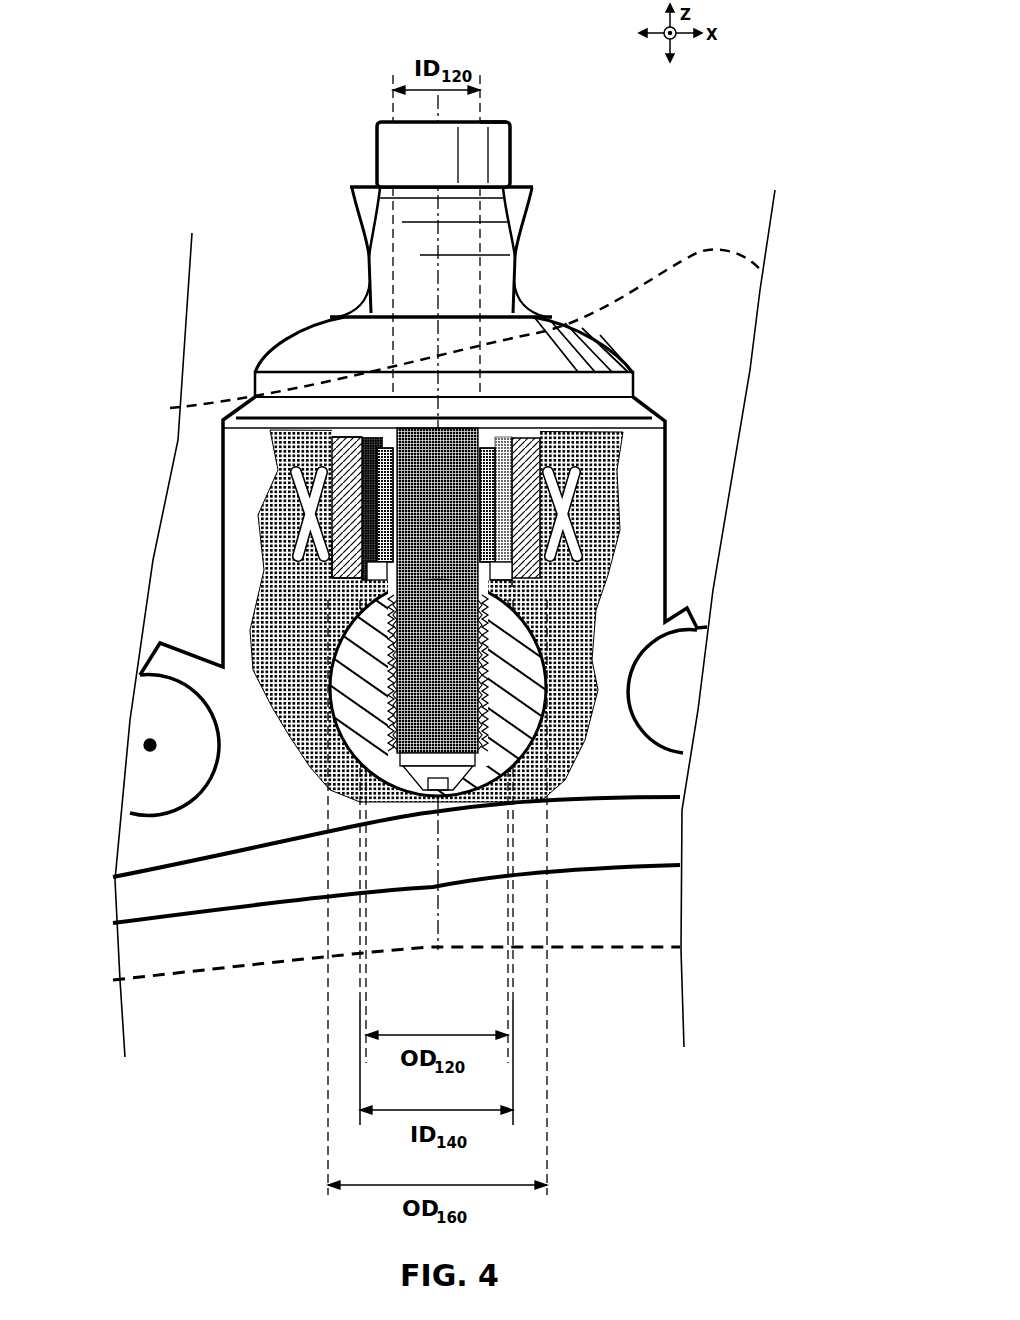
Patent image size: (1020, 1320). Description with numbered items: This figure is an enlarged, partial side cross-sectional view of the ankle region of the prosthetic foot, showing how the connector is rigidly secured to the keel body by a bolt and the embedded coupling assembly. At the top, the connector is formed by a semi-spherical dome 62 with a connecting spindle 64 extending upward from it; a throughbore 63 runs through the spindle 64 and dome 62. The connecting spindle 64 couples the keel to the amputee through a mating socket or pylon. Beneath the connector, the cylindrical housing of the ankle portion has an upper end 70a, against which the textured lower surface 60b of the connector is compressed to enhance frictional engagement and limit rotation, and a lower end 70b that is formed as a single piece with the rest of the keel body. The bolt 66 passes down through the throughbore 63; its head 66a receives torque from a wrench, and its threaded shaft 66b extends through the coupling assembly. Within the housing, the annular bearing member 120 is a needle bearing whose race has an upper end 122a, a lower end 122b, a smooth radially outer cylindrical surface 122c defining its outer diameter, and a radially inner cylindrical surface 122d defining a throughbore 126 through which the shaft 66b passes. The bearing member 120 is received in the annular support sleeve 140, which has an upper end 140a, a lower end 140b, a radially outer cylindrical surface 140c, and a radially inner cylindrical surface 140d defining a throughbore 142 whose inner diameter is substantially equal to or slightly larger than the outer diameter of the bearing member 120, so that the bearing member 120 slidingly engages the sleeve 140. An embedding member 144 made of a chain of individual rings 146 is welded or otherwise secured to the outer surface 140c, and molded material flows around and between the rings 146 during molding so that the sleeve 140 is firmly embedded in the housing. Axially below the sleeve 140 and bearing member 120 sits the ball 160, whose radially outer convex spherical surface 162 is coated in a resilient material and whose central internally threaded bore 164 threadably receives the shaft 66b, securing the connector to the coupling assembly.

The lower surface 60b is at (343, 385).
The semi-spherical dome 62 is at (593, 341).
The throughbore 63 is at (482, 210).
The connecting spindle 64 is at (517, 253).
The bolt 66 is at (372, 152).
The head 66a is at (513, 147).
The threaded shaft 66b is at (488, 605).
The upper end 70a is at (630, 382).
The lower end 70b is at (563, 797).
The annular bearing member 120 is at (515, 517).
The upper end 122a is at (515, 436).
The lower end 122b is at (518, 587).
The radially outer cylindrical surface 122c is at (510, 558).
The radially inner cylindrical surface 122d is at (388, 440).
The throughbore 126 is at (483, 436).
The annular support sleeve 140 is at (327, 455).
The upper end 140a is at (328, 438).
The lower end 140b is at (332, 581).
The radially outer cylindrical surface 140c is at (327, 537).
The radially inner cylindrical surface 140d is at (365, 480).
The throughbore 142 is at (358, 588).
The embedding member 144 is at (583, 488).
The rings 146 is at (572, 473).
The ball 160 is at (557, 703).
The radially outer convex spherical surface 162 is at (540, 745).
The internally threaded bore 164 is at (392, 707).